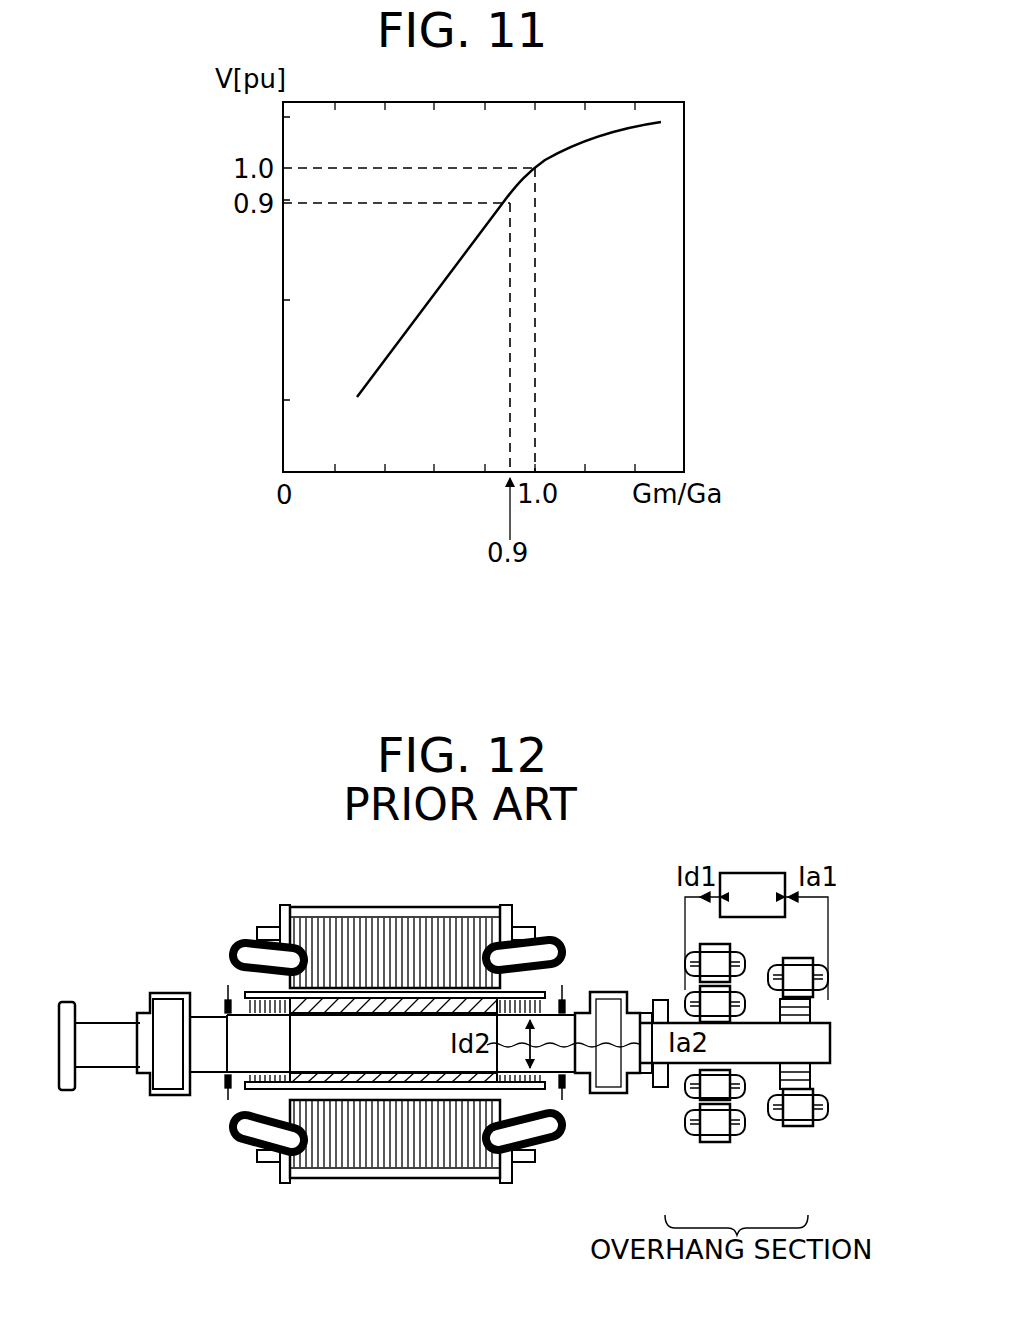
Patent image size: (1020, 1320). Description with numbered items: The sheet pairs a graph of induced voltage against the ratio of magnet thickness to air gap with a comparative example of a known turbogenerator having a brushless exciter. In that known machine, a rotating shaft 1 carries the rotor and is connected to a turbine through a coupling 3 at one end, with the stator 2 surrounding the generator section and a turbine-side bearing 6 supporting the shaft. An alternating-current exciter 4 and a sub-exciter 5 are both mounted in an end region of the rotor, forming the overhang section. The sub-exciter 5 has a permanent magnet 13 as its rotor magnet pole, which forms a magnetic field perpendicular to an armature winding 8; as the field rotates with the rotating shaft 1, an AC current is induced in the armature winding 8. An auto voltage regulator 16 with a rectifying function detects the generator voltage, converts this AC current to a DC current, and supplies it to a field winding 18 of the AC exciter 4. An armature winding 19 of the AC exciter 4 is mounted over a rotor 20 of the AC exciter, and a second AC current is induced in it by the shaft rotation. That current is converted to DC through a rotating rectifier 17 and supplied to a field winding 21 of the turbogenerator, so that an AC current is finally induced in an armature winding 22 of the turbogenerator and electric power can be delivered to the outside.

The rotating shaft 1 is at (103, 1030).
The stator 2 is at (386, 930).
The coupling 3 is at (66, 1002).
The alternating-current exciter 4 is at (712, 1087).
The sub-exciter 5 is at (793, 1092).
The turbine-side bearing 6 is at (605, 1084).
The armature winding 8 is at (828, 989).
The permanent magnet 13 is at (808, 1010).
The auto voltage regulator 16 is at (770, 873).
The rotating rectifier 17 is at (660, 1008).
The field winding 18 is at (688, 1132).
The armature winding 19 is at (688, 996).
The rotor 20 is at (690, 1094).
The field winding 21 is at (553, 1143).
The armature winding 22 is at (463, 1084).